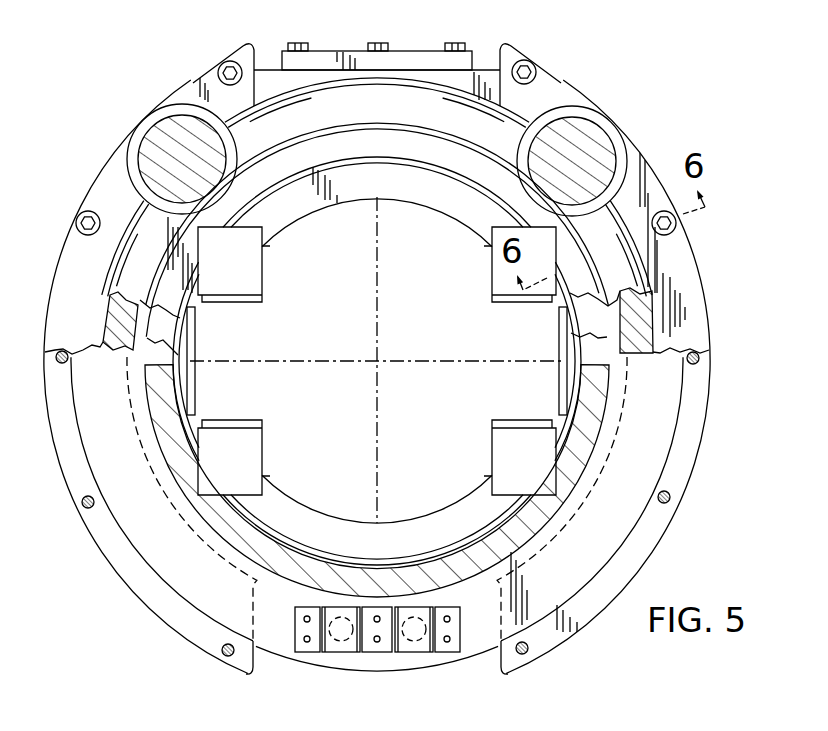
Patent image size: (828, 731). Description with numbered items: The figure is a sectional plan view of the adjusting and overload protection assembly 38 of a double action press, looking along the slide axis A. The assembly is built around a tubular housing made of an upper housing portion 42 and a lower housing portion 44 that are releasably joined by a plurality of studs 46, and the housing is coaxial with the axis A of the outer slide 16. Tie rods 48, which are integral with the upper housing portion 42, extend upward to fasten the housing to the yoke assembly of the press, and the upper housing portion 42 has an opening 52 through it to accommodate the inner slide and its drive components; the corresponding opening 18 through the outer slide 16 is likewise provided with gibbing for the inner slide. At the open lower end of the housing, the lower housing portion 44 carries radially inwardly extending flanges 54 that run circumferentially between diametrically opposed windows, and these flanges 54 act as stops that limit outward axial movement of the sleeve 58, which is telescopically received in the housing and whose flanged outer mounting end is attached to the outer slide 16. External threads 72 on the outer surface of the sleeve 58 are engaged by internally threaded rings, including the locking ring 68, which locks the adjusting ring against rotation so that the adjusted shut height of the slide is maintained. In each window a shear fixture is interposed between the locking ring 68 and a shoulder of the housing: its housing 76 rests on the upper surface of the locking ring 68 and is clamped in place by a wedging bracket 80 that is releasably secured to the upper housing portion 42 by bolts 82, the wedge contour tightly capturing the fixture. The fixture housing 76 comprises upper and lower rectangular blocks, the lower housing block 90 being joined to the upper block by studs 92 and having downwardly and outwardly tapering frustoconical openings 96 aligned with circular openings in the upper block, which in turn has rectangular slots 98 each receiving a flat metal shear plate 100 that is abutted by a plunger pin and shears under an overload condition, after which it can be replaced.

The outer slide 16 is at (250, 463).
The opening 18 is at (302, 220).
The adjusting and overload protection assembly 38 is at (727, 339).
The upper housing portion 42 is at (410, 157).
The lower housing portion 44 is at (112, 557).
The studs 46 is at (532, 68).
The tie rods 48 is at (157, 133).
The opening 52 is at (343, 163).
The flanges 54 is at (173, 567).
The sleeve 58 is at (350, 568).
The locking ring 68 is at (270, 640).
The external threads 72 is at (457, 580).
The housing 76 is at (339, 657).
The wedging bracket 80 is at (357, 58).
The bolts 82 is at (300, 43).
The lower housing block 90 is at (384, 652).
The studs 92 is at (450, 639).
The frustoconical openings 96 is at (337, 608).
The rectangular slots 98 is at (431, 652).
The shear plate 100 is at (411, 652).
The axis A is at (377, 361).